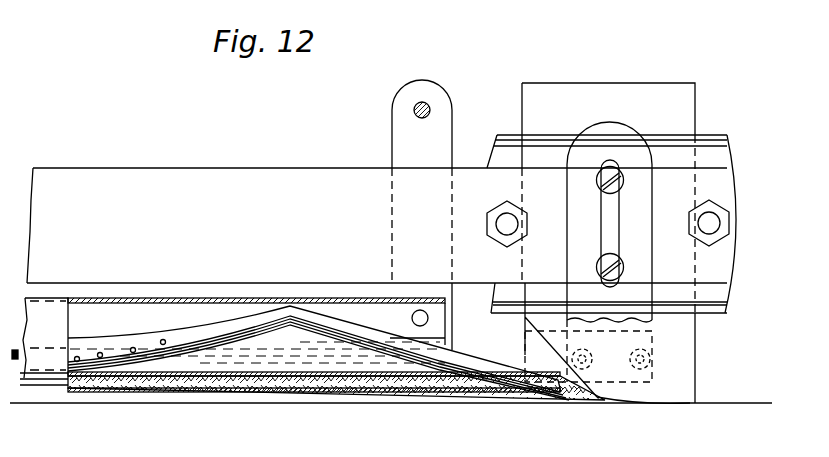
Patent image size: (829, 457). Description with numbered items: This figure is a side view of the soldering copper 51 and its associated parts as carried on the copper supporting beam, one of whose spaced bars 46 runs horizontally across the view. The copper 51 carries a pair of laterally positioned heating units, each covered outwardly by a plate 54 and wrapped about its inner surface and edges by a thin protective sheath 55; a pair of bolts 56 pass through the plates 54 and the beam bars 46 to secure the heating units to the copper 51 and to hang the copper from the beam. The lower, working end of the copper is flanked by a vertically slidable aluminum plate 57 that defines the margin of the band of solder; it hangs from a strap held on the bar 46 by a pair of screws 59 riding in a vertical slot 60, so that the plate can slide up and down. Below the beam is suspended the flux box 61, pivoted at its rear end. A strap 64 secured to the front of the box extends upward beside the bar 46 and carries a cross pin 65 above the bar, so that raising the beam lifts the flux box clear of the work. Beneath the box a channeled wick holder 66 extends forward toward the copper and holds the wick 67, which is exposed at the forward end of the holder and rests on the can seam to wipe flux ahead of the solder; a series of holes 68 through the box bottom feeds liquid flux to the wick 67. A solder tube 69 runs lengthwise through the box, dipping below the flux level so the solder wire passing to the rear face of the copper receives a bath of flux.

The bar 46 is at (284, 170).
The soldering copper 51 is at (688, 110).
The plate 54 is at (722, 291).
The protective sheath 55 is at (505, 135).
The bolt 56 is at (505, 230).
The vertically slidable plate 57 is at (525, 352).
The screw 59 is at (620, 268).
The vertical slot 60 is at (614, 216).
The flux box 61 is at (132, 303).
The strap 64 is at (392, 130).
The cross pin 65 is at (426, 105).
The wick holder 66 is at (220, 392).
The wick 67 is at (300, 394).
The hole 68 is at (187, 386).
The tube 69 is at (232, 322).